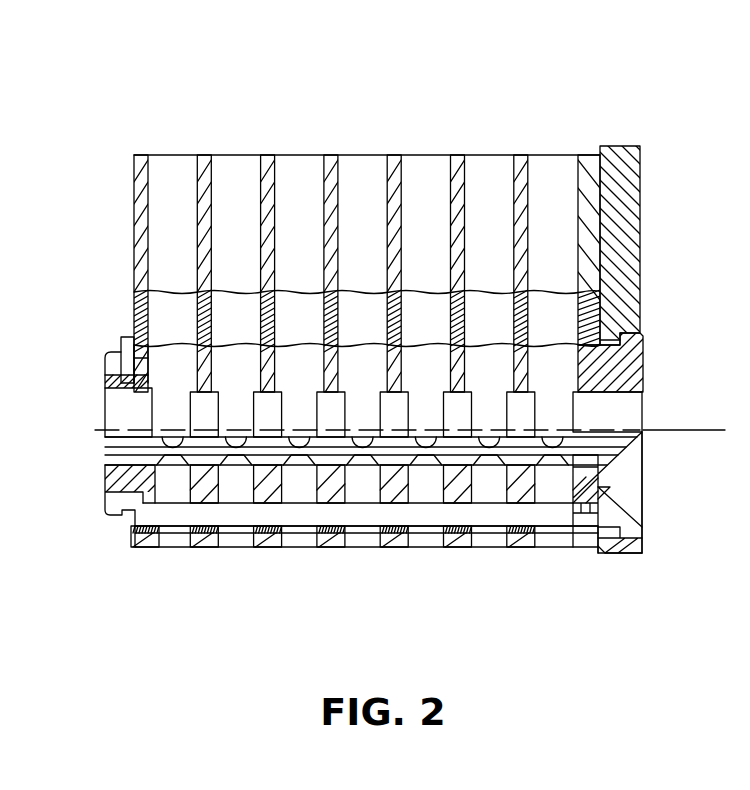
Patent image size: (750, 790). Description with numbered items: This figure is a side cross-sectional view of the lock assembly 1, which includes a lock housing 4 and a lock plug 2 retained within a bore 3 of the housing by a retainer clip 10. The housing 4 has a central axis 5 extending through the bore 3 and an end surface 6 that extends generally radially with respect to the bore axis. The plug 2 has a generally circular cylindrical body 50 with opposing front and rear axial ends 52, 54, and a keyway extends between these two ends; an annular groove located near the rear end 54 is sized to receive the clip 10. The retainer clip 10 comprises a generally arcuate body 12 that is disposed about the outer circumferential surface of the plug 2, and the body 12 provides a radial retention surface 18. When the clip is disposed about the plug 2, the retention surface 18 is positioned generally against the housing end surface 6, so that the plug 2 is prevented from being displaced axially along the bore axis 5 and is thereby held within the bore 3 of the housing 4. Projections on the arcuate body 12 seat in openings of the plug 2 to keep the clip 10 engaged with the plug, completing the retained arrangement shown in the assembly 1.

The lock assembly 1 is at (446, 117).
The lock plug 2 is at (87, 395).
The bore 3 is at (177, 525).
The lock housing 4 is at (182, 149).
The central axis 5 is at (682, 430).
The end surface 6 is at (138, 338).
The retainer clip 10 is at (119, 330).
The arcuate body 12 is at (128, 348).
The radial retention surface 18 is at (140, 348).
The circular cylindrical body 50 is at (649, 521).
The front axial end 52 is at (644, 356).
The rear axial end 54 is at (110, 480).